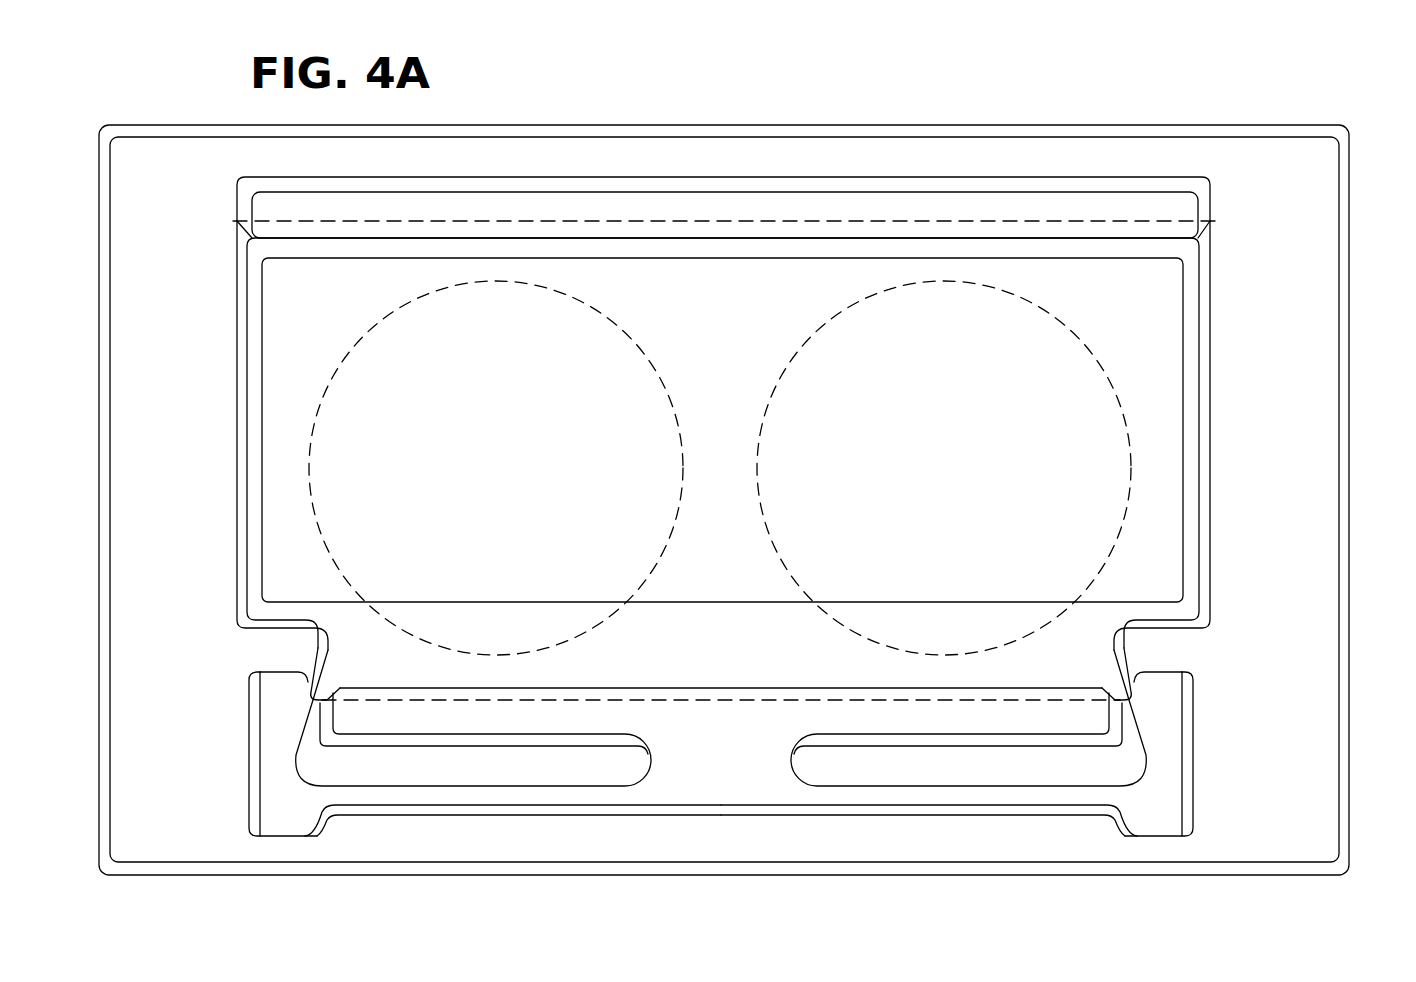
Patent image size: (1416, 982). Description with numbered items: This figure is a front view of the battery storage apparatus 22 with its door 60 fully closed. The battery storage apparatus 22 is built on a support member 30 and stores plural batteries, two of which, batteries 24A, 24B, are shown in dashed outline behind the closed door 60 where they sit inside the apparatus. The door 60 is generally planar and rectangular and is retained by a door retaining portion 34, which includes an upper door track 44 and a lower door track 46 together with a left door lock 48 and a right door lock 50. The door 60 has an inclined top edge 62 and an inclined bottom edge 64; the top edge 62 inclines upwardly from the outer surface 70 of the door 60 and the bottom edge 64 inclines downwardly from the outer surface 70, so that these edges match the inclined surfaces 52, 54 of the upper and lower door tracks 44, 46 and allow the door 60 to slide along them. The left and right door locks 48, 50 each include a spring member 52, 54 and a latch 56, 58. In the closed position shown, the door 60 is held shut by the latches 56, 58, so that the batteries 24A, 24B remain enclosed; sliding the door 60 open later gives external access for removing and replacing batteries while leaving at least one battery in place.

The battery storage apparatus 22 is at (1100, 98).
The support member 30 is at (1302, 312).
The door retaining portion 34 is at (672, 182).
The upper door track 44 is at (1178, 208).
The top edge 62 is at (294, 230).
The door 60 is at (234, 346).
The outer surface 70 is at (1165, 450).
The battery 24A is at (370, 330).
The battery 24B is at (820, 330).
The bottom edge 64 is at (712, 692).
The left door lock 48 is at (432, 750).
The right door lock 50 is at (1008, 752).
The latch 56 is at (272, 695).
The latch 58 is at (1162, 697).
The lower door track 46 is at (878, 720).
The spring member 52 is at (461, 797).
The spring member 54 is at (985, 797).